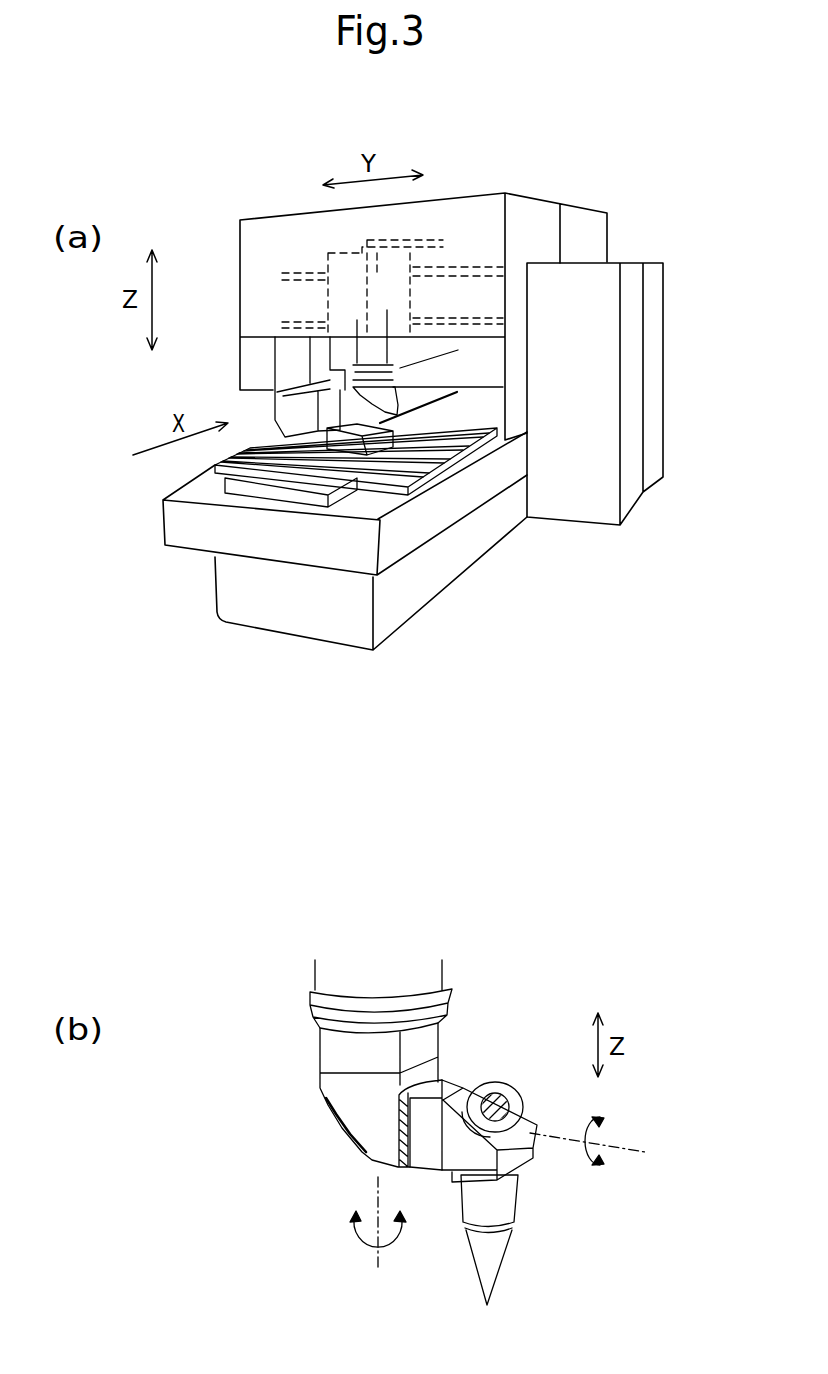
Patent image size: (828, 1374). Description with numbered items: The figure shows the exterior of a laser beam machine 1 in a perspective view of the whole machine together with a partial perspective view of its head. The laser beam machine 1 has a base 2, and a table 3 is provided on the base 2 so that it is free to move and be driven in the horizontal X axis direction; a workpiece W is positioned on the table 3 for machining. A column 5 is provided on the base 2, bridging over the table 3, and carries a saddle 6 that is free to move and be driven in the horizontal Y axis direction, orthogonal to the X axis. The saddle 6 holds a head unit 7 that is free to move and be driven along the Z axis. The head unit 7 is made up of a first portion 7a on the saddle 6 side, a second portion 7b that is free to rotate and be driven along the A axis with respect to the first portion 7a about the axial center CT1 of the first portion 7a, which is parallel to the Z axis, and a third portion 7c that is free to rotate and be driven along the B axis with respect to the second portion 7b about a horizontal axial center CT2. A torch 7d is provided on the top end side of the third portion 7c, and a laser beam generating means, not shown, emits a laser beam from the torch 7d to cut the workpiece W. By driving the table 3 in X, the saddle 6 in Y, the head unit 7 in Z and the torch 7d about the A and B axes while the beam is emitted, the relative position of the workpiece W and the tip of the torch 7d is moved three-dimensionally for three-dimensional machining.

The laser beam machine 1 is at (445, 147).
The base 2 is at (440, 594).
The table 3 is at (442, 477).
The column 5 is at (240, 290).
The saddle 6 is at (413, 290).
The head unit 7 is at (416, 380).
The first portion 7a is at (447, 973).
The second portion 7b is at (318, 1055).
The third portion 7c is at (463, 1081).
The torch 7d is at (503, 1260).
The workpiece W is at (353, 455).
The axial center of the first portion CT1 is at (367, 1287).
The horizontal axial center CT2 is at (632, 1160).